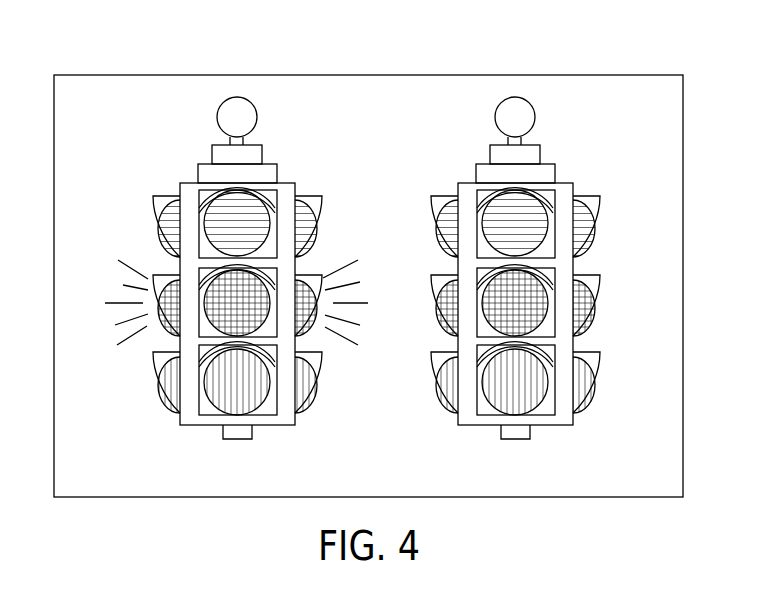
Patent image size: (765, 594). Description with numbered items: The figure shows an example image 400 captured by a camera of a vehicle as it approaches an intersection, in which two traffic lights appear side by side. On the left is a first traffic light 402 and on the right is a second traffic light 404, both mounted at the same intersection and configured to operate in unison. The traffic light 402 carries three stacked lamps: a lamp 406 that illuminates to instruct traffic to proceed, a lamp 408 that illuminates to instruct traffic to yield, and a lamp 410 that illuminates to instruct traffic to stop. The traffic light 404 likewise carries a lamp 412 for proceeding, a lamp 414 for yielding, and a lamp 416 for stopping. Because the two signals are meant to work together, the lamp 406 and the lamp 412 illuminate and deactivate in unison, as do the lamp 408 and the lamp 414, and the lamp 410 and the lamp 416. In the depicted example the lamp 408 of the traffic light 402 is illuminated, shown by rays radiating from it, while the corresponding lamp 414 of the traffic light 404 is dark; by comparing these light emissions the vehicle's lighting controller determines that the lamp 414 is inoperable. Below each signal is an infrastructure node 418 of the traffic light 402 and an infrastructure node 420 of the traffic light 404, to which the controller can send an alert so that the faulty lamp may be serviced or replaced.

The image 400 is at (372, 75).
The traffic light 402 is at (257, 112).
The traffic light 404 is at (535, 112).
The lamp 406 is at (146, 229).
The lamp 408 is at (127, 295).
The lamp 410 is at (146, 397).
The lamp 412 is at (611, 230).
The lamp 414 is at (611, 308).
The lamp 416 is at (611, 385).
The infrastructure node 418 is at (237, 439).
The infrastructure node 420 is at (515, 439).